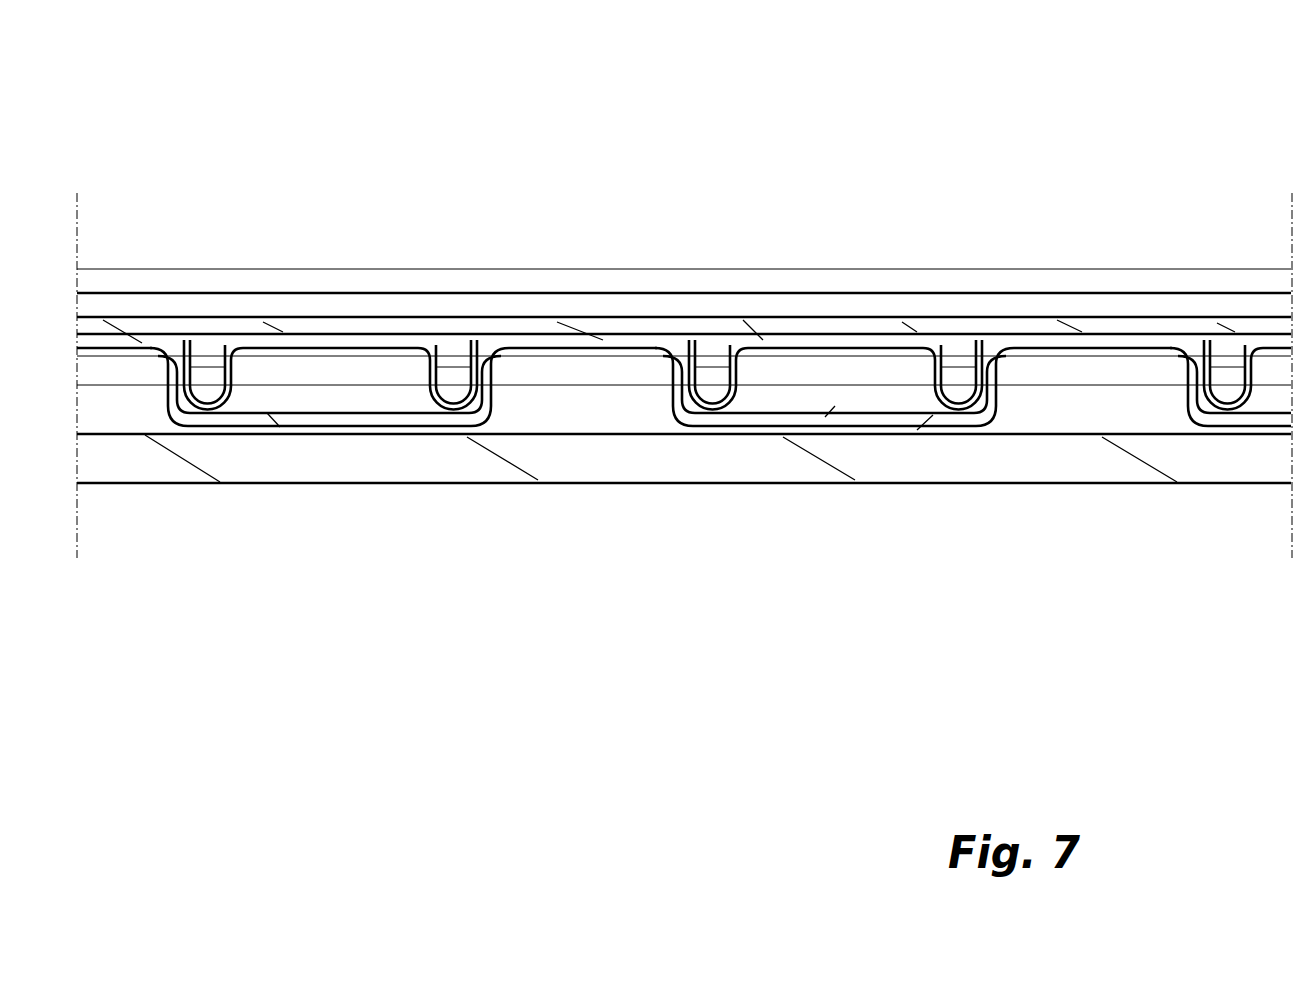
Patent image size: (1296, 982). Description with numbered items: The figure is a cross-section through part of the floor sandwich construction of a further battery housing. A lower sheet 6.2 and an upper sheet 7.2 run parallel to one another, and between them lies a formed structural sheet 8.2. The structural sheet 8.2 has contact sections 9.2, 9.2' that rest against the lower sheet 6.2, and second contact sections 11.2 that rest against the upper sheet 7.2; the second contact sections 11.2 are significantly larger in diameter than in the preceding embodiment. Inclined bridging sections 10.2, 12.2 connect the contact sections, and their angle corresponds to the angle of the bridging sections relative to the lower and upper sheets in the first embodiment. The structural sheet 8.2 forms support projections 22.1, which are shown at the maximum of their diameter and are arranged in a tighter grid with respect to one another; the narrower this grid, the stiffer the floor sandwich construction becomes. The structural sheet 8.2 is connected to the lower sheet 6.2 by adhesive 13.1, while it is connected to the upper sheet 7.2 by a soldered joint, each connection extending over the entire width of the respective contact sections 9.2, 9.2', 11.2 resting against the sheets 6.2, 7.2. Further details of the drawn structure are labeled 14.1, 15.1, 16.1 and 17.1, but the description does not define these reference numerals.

The lower sheet 6.2 is at (1095, 456).
The upper sheet 7.2 is at (1038, 327).
The structural sheet 8.2 is at (972, 376).
The contact section 9.2 is at (336, 483).
The contact section 9.2' is at (867, 518).
The bridging section 10.2 is at (469, 376).
The second contact section 11.2 is at (557, 331).
The bridging section 12.2 is at (708, 375).
The adhesive 13.1 is at (292, 437).
The side wall 14.1 is at (478, 420).
The fold 15.1 is at (466, 371).
The side wall of second bead 16.1 is at (672, 353).
The bottom corner 17.1 is at (704, 425).
The support projection 22.1 is at (700, 341).